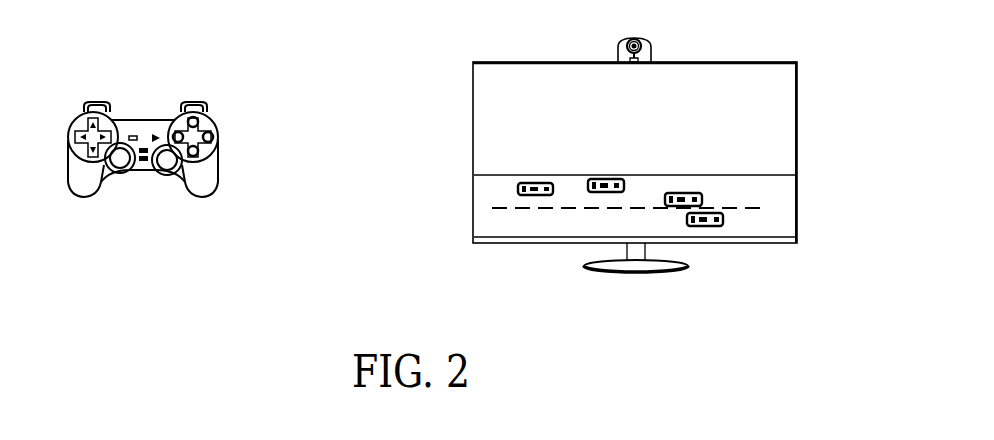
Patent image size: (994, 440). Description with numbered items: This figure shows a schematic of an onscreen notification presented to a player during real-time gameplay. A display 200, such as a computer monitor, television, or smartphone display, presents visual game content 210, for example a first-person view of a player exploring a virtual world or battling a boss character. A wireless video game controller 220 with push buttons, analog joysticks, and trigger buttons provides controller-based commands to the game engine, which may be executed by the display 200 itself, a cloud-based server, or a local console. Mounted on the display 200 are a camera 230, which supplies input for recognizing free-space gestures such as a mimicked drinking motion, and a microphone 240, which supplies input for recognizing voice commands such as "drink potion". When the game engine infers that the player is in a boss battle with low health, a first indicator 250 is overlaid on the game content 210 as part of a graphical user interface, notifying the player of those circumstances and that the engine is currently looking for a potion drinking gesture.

The display 200 is at (797, 103).
The visual game content 210 is at (772, 202).
The wireless video game controller 220 is at (222, 152).
The camera 230 is at (619, 44).
The microphone 240 is at (649, 43).
The first indicator 250 is at (768, 164).